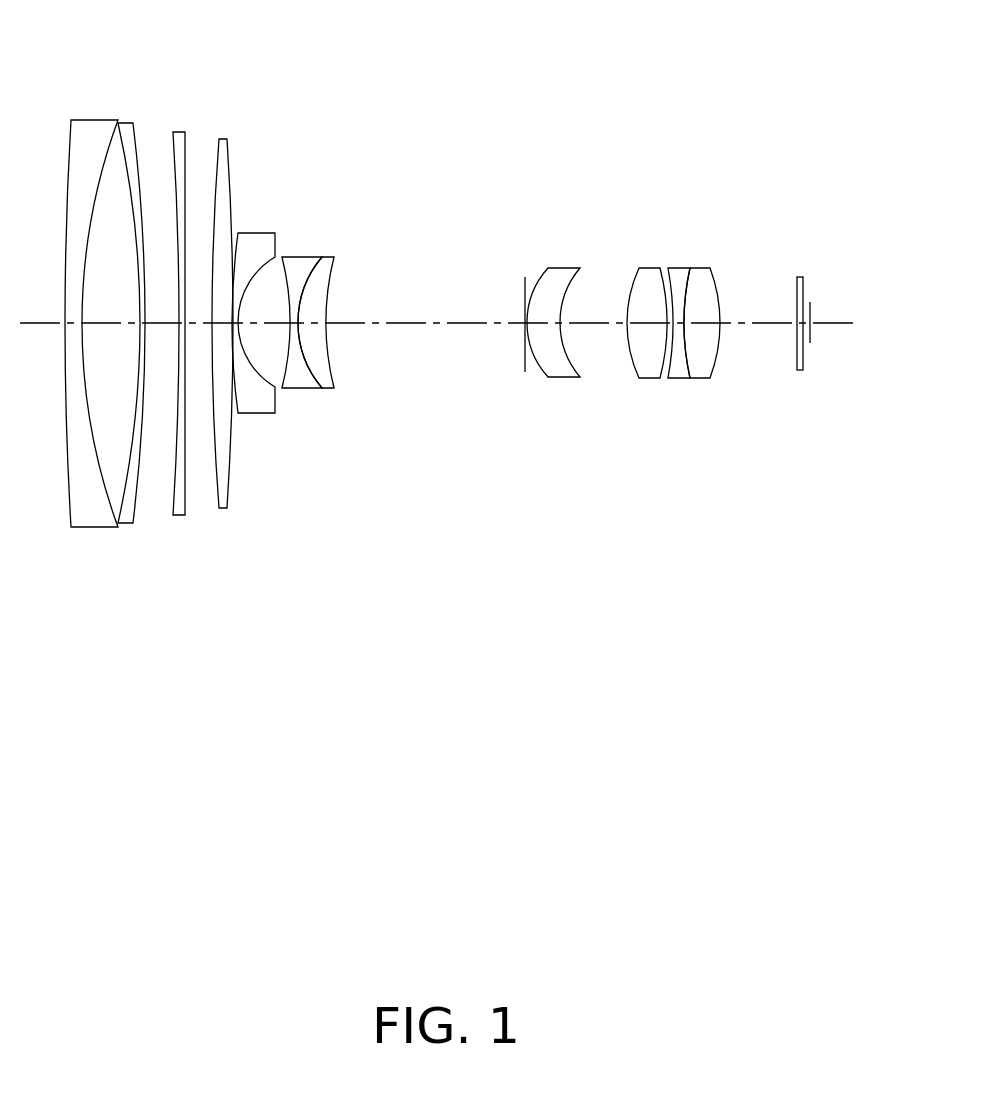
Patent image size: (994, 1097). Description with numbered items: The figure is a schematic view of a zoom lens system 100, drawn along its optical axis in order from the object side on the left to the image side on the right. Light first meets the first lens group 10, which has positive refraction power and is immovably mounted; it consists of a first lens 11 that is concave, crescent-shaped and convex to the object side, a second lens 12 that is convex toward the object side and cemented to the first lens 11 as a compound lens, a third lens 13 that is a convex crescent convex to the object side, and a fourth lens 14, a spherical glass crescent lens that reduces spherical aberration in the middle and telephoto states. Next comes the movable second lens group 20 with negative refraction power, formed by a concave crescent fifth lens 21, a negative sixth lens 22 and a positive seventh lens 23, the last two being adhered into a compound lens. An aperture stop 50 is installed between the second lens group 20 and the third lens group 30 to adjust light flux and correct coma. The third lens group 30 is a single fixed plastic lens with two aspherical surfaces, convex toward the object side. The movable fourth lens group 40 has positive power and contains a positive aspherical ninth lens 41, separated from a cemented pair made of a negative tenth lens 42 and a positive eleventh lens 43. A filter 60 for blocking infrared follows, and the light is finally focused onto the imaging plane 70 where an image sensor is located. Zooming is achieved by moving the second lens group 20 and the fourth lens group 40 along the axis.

The zoom lens system 100 is at (510, 100).
The first lens group 10 is at (217, 53).
The first lens 11 is at (84, 118).
The second lens 12 is at (125, 122).
The third lens 13 is at (179, 131).
The fourth lens 14 is at (222, 138).
The second lens group 20 is at (343, 173).
The fifth lens 21 is at (257, 232).
The sixth lens 22 is at (295, 256).
The seventh lens 23 is at (332, 256).
The third lens group 30 is at (563, 267).
The fourth lens group 40 is at (718, 192).
The ninth lens 41 is at (642, 267).
The tenth lens 42 is at (680, 267).
The eleventh lens 43 is at (702, 267).
The aperture stop 50 is at (523, 288).
The filter 60 is at (800, 276).
The imaging plane 70 is at (811, 306).